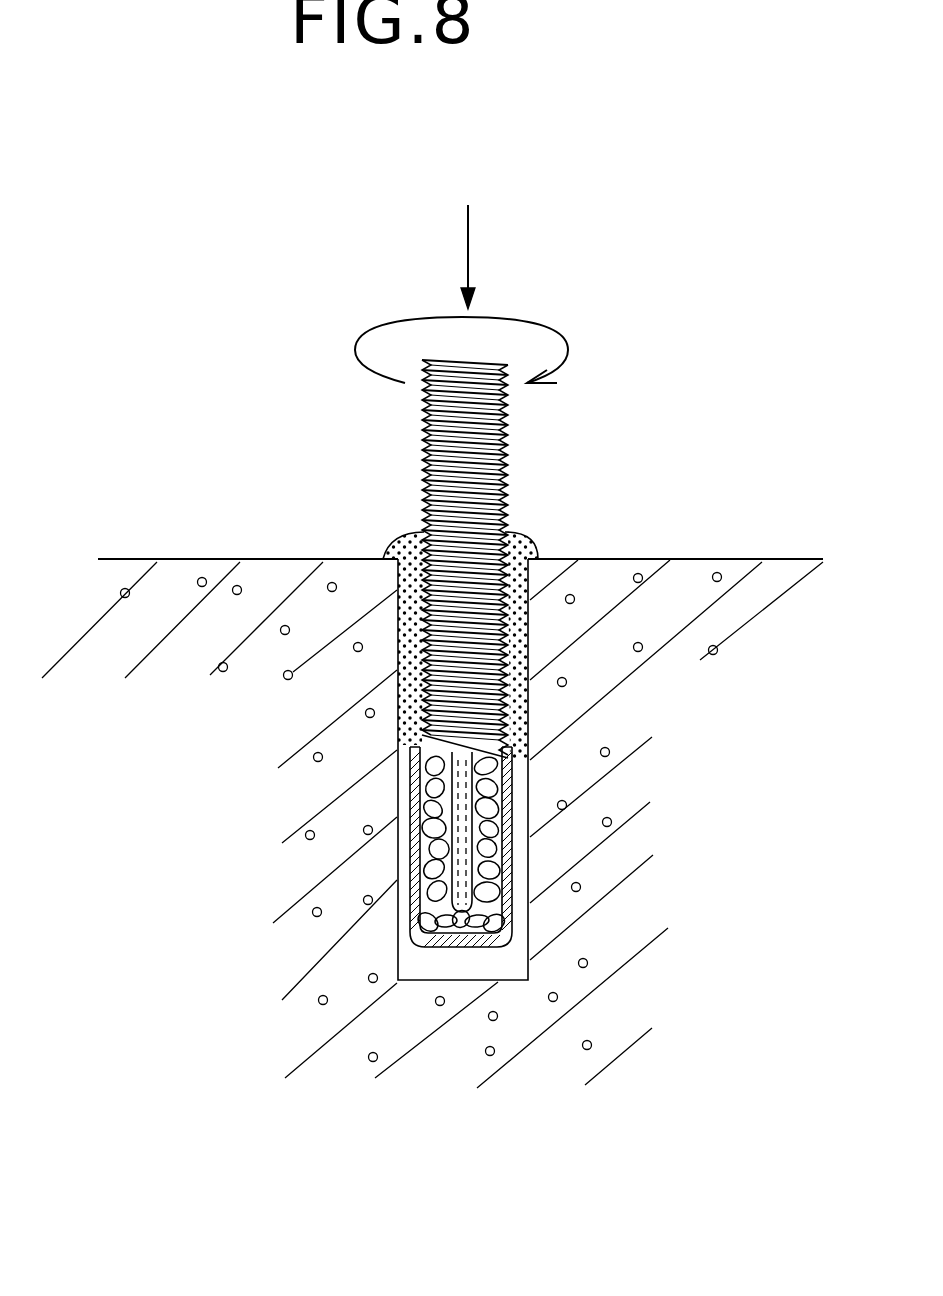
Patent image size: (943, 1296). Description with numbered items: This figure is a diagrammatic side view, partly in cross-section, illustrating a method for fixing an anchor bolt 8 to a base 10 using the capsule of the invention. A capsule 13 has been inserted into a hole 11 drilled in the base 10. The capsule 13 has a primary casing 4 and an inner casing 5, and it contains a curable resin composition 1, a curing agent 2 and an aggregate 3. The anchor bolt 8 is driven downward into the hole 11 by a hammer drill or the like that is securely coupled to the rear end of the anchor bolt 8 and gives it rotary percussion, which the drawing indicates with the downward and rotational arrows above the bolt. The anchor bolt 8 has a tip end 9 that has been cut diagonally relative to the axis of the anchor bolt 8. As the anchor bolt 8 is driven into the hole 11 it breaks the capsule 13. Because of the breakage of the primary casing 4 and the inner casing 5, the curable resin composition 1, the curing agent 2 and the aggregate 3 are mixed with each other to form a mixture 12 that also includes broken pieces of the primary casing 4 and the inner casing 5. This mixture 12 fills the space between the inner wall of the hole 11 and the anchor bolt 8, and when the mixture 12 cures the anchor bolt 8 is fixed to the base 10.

The curable resin composition 1 is at (410, 867).
The curing agent 2 is at (472, 768).
The aggregate 3 is at (453, 938).
The primary casing 4 is at (415, 940).
The inner casing 5 is at (505, 860).
The anchor bolt 8 is at (422, 448).
The tip end 9 is at (422, 735).
The base 10 is at (343, 808).
The hole 11 is at (398, 833).
The mixture 12 is at (413, 607).
The capsule 13 is at (510, 930).